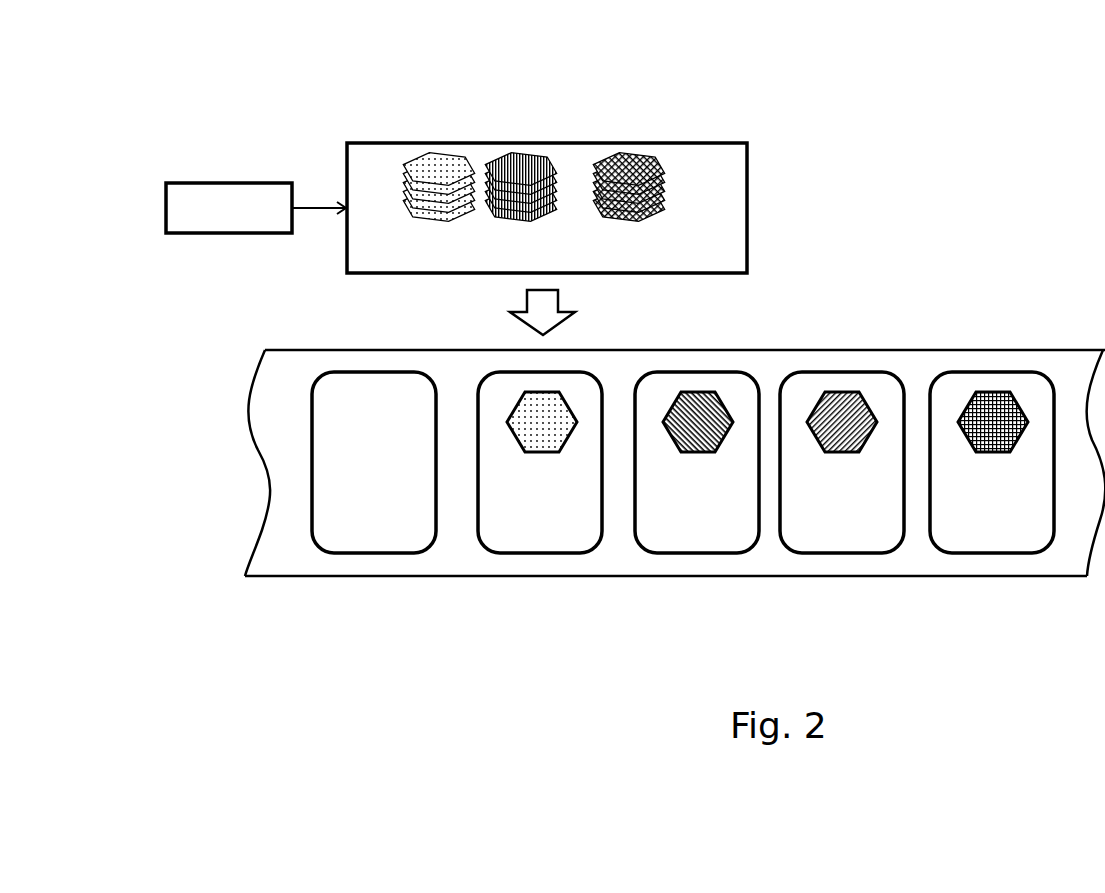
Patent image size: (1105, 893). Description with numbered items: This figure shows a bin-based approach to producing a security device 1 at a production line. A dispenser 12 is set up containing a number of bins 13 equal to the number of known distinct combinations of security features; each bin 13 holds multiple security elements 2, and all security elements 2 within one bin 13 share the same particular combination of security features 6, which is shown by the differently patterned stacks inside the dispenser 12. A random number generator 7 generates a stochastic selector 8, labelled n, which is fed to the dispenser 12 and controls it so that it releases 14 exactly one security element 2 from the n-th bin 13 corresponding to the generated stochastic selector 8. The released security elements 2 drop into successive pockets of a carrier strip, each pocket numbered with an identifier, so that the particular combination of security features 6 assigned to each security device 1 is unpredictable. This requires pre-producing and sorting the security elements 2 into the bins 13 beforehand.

The security device 1 is at (983, 553).
The security element 2 is at (563, 392).
The particular combination of security features 6 is at (540, 422).
The random number generator 7 is at (228, 183).
The stochastic selector 8 is at (312, 166).
The dispenser 12 is at (688, 143).
The bin 13 is at (617, 160).
The release of a security element 14 is at (545, 302).